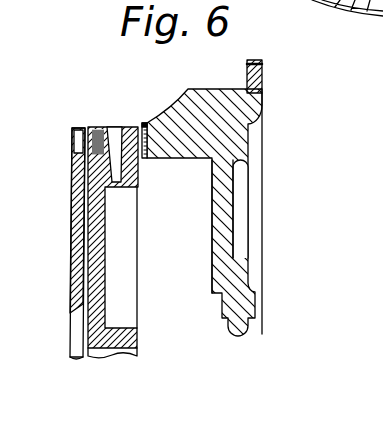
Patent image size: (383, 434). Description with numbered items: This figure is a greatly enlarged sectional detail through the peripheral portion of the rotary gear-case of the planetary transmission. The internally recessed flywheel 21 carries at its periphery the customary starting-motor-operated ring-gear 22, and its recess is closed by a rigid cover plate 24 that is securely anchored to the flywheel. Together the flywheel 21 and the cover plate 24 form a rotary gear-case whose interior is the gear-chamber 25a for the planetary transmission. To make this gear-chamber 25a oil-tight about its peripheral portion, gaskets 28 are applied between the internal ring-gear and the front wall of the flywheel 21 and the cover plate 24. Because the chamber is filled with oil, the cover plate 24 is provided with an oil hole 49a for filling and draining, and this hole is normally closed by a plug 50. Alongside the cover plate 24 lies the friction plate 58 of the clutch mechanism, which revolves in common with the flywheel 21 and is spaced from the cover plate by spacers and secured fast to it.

The flywheel 21 is at (262, 113).
The ring-gear 22 is at (264, 67).
The cover plate 24 is at (95, 282).
The gear-chamber 25a is at (213, 198).
The gaskets 28 is at (157, 120).
The oil hole 49a is at (113, 178).
The plug 50 is at (97, 128).
The friction plate 58 is at (75, 279).